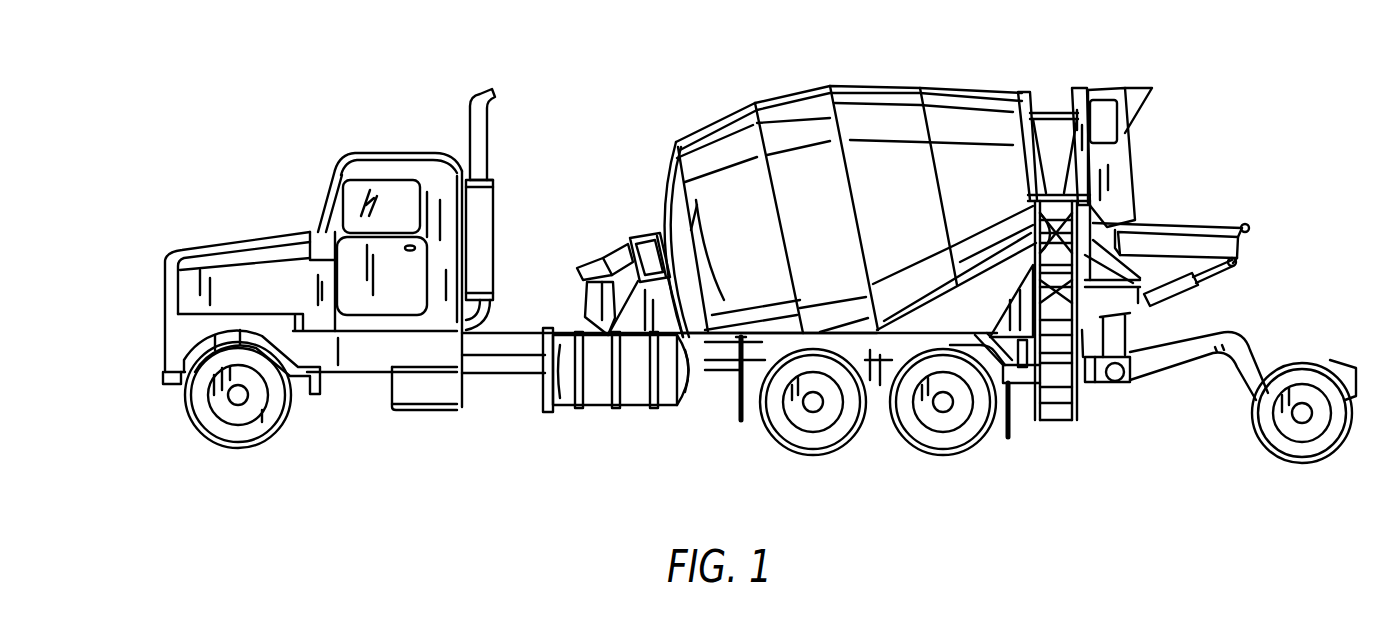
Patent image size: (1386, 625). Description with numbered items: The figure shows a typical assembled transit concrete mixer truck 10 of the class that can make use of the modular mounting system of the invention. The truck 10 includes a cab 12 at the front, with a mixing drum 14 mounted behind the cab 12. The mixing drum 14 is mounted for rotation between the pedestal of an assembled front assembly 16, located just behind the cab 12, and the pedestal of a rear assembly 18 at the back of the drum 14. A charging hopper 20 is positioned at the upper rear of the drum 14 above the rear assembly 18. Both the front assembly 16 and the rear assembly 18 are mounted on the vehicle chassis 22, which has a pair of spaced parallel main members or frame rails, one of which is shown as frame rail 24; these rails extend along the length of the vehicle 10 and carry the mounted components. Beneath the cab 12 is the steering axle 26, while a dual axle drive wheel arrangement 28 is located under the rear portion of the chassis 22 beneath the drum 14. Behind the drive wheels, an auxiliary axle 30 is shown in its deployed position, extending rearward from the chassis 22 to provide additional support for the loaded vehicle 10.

The transit concrete mixer truck 10 is at (816, 60).
The cab 12 is at (380, 134).
The mixing drum 14 is at (908, 72).
The front assembly 16 is at (568, 290).
The rear assembly 18 is at (1002, 296).
The charging hopper 20 is at (1140, 90).
The vehicle chassis 22 is at (508, 390).
The frame rail 24 is at (720, 378).
The steering axle 26 is at (238, 404).
The dual axle drive wheel arrangement 28 is at (882, 437).
The auxiliary axle 30 is at (1242, 326).